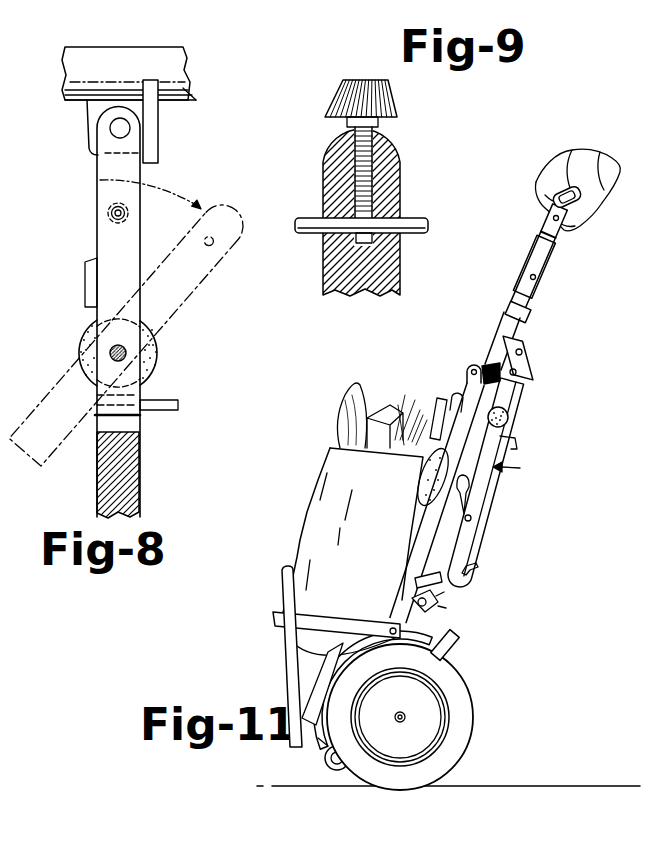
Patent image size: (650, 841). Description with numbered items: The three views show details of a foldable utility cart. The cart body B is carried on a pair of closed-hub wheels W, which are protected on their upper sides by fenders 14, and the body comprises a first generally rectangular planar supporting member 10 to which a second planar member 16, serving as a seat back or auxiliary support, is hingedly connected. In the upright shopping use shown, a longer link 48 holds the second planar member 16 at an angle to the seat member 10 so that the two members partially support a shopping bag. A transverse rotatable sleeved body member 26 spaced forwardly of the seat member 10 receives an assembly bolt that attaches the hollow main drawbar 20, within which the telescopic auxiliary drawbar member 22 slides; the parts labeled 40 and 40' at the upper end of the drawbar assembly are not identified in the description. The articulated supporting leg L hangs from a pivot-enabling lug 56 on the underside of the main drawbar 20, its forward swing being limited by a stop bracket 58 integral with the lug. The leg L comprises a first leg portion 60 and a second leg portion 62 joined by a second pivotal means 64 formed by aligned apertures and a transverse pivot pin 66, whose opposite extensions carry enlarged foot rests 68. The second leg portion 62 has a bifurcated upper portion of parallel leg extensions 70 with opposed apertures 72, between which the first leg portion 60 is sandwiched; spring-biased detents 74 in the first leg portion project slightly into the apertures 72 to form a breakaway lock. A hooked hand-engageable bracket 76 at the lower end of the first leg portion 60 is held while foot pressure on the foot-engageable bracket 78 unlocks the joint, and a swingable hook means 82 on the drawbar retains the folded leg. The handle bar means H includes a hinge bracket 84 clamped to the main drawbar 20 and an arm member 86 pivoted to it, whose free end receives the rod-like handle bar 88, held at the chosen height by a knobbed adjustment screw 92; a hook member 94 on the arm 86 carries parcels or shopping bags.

In FIG. 8, the main drawbar 20 is at (95, 56).
In FIG. 11, the main drawbar 20 is at (501, 333).
In FIG. 8, the pivot-enabling bracket or lug 56 is at (88, 118).
In FIG. 8, the stop bracket 58 is at (158, 137).
In FIG. 8, the first leg portion 60 is at (97, 240).
In FIG. 11, the first leg portion 60 is at (527, 356).
In FIG. 8, the second leg portion 62 is at (133, 478).
In FIG. 11, the second leg portion 62 is at (486, 487).
In FIG. 8, the second pivotal means 64 is at (126, 346).
In FIG. 8, the pivot pin 66 is at (110, 352).
In FIG. 8, the foot rests 68 is at (2, 320).
In FIG. 11, the foot rests 68 is at (508, 415).
In FIG. 8, the leg extensions 70 is at (112, 184).
In FIG. 8, the apertures 72 is at (128, 214).
In FIG. 8, the detents 74 is at (114, 213).
In FIG. 8, the hand-engageable bracket 76 is at (178, 401).
In FIG. 9, the arm member 86 is at (392, 267).
In FIG. 11, the arm member 86 is at (467, 374).
In FIG. 9, the handle bar 88 is at (422, 218).
In FIG. 9, the knobbed adjustment screw 92 is at (395, 119).
In FIG. 11, the handle 40 is at (539, 246).
In FIG. 11, the hand 40' is at (577, 179).
In FIG. 11, the auxiliary drawbar member 22 is at (531, 308).
In FIG. 11, the hinge bracket 84 is at (490, 365).
In FIG. 11, the hook member 94 is at (448, 406).
In FIG. 11, the supporting leg L is at (514, 468).
In FIG. 11, the swingable hook means 82 is at (473, 503).
In FIG. 11, the foot-engageable bracket 78 is at (478, 565).
In FIG. 11, the handle bar means H is at (428, 480).
In FIG. 11, the sleeved body member 26 is at (418, 580).
In FIG. 11, the link 48 is at (320, 618).
In FIG. 11, the second planar member 16 is at (284, 640).
In FIG. 11, the first planar supporting member 10 is at (323, 698).
In FIG. 11, the fenders 14 is at (320, 749).
In FIG. 11, the wheels W is at (465, 692).
In FIG. 11, the cart body B is at (435, 627).